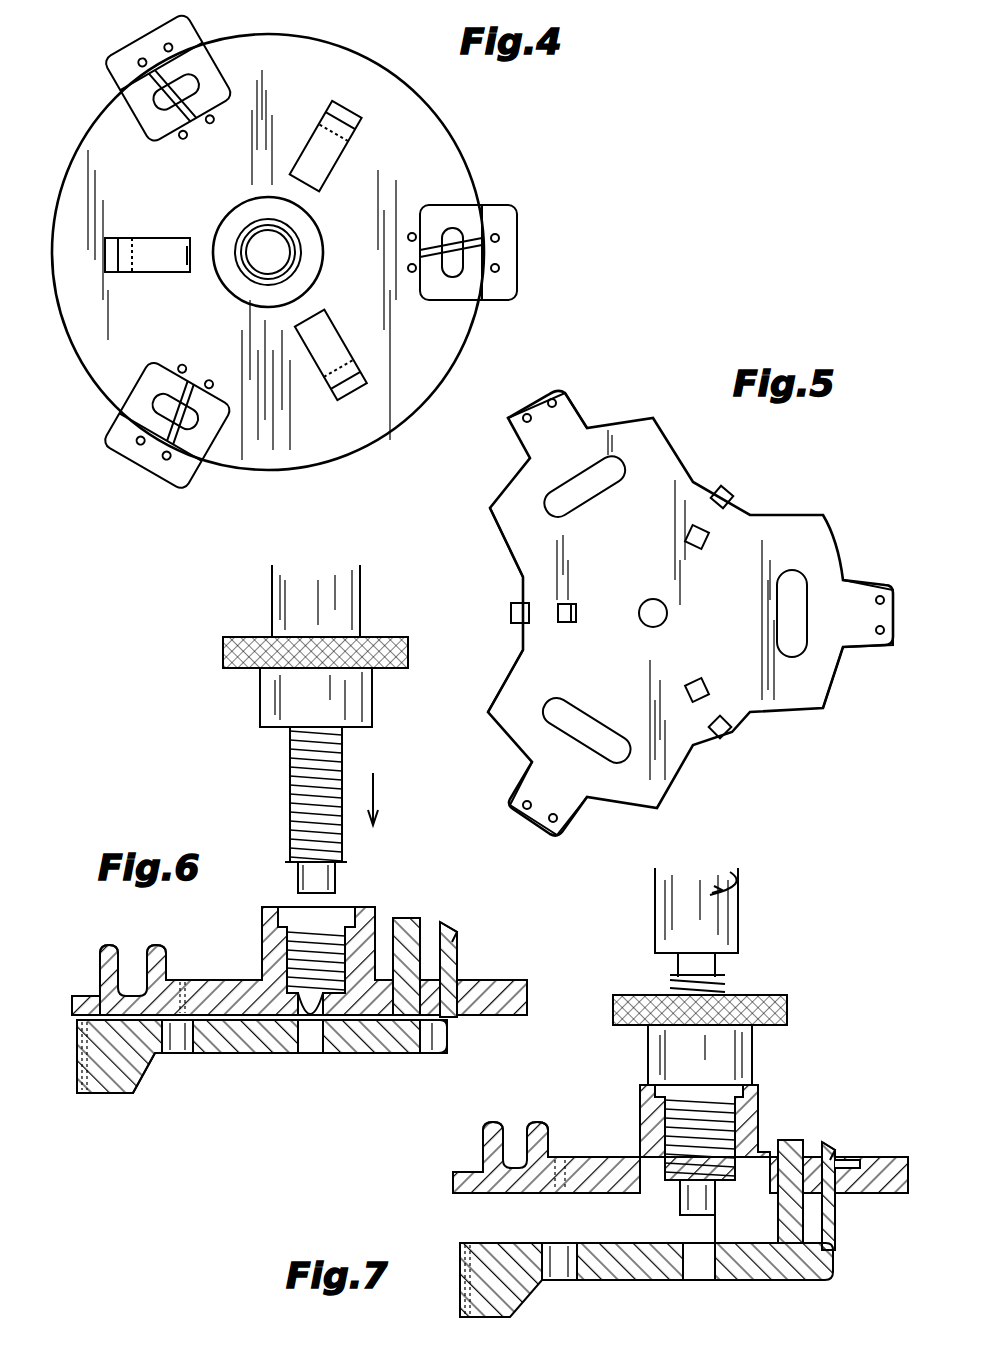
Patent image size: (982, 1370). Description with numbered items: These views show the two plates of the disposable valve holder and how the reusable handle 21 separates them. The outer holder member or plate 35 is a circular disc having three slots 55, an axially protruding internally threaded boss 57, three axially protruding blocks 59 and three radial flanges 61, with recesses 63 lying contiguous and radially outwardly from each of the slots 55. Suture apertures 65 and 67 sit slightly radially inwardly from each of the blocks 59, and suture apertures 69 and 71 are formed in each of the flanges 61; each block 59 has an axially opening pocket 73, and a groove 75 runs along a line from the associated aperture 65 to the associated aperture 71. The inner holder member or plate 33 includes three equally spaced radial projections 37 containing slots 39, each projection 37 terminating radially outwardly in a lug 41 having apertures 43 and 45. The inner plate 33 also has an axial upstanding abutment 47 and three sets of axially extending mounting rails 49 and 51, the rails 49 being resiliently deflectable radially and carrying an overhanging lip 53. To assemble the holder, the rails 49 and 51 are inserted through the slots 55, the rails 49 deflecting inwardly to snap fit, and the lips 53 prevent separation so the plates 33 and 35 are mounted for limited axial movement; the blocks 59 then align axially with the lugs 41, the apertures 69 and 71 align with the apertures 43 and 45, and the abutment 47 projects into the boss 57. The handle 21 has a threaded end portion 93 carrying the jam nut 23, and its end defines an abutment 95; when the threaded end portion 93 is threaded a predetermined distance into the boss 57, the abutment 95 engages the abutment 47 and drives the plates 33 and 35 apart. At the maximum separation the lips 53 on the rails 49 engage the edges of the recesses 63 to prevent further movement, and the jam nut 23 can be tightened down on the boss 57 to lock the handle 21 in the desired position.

In FIG. 6, the handle 21 is at (275, 590).
In FIG. 7, the handle 21 is at (690, 865).
In FIG. 6, the jam nut 23 is at (225, 650).
In FIG. 7, the jam nut 23 is at (755, 1000).
In FIG. 5, the inner holder member or plate 33 is at (818, 512).
In FIG. 6, the inner holder member or plate 33 is at (118, 1110).
In FIG. 7, the inner holder member or plate 33 is at (447, 1282).
In FIG. 4, the outer holder member or plate 35 is at (462, 127).
In FIG. 6, the outer holder member or plate 35 is at (85, 978).
In FIG. 7, the outer holder member or plate 35 is at (430, 1178).
In FIG. 5, the radial projections 37 is at (490, 508).
In FIG. 5, the slots 39 is at (555, 500).
In FIG. 6, the slots 39 is at (180, 1055).
In FIG. 7, the slots 39 is at (559, 1261).
In FIG. 5, the lug 41 is at (562, 392).
In FIG. 5, the apertures 43 is at (552, 398).
In FIG. 6, the apertures 43 is at (75, 1050).
In FIG. 5, the apertures 45 is at (527, 413).
In FIG. 5, the abutment 47 is at (640, 610).
In FIG. 6, the abutment 47 is at (308, 1055).
In FIG. 7, the abutment 47 is at (690, 1230).
In FIG. 5, the mounting rails 49 is at (713, 492).
In FIG. 6, the mounting rails 49 is at (455, 962).
In FIG. 7, the mounting rails 49 is at (838, 1222).
In FIG. 5, the mounting rails 51 is at (685, 535).
In FIG. 6, the mounting rails 51 is at (408, 920).
In FIG. 7, the mounting rails 51 is at (790, 1140).
In FIG. 6, the overhanging lip 53 is at (455, 935).
In FIG. 7, the overhanging lip 53 is at (836, 1148).
In FIG. 4, the slots 55 is at (180, 245).
In FIG. 6, the slots 55 is at (425, 1055).
In FIG. 7, the slots 55 is at (606, 1157).
In FIG. 4, the boss 57 is at (248, 282).
In FIG. 6, the boss 57 is at (270, 905).
In FIG. 7, the boss 57 is at (635, 1098).
In FIG. 4, the blocks 59 is at (230, 100).
In FIG. 4, the radial flanges 61 is at (150, 40).
In FIG. 6, the radial flanges 61 is at (74, 1000).
In FIG. 4, the recesses 63 is at (345, 120).
In FIG. 6, the recesses 63 is at (470, 1018).
In FIG. 7, the recesses 63 is at (850, 1160).
In FIG. 4, the suture apertures 65 is at (210, 118).
In FIG. 6, the suture apertures 65 is at (195, 975).
In FIG. 7, the suture apertures 65 is at (560, 1175).
In FIG. 4, the suture apertures 67 is at (182, 140).
In FIG. 4, the suture apertures 69 is at (172, 50).
In FIG. 4, the suture apertures 71 is at (140, 67).
In FIG. 4, the pocket 73 is at (183, 94).
In FIG. 6, the pocket 73 is at (128, 960).
In FIG. 7, the pocket 73 is at (515, 1147).
In FIG. 4, the groove 75 is at (195, 120).
In FIG. 6, the threaded end portion 93 is at (290, 768).
In FIG. 7, the threaded end portion 93 is at (668, 1125).
In FIG. 6, the abutment 95 is at (338, 878).
In FIG. 7, the abutment 95 is at (712, 1208).